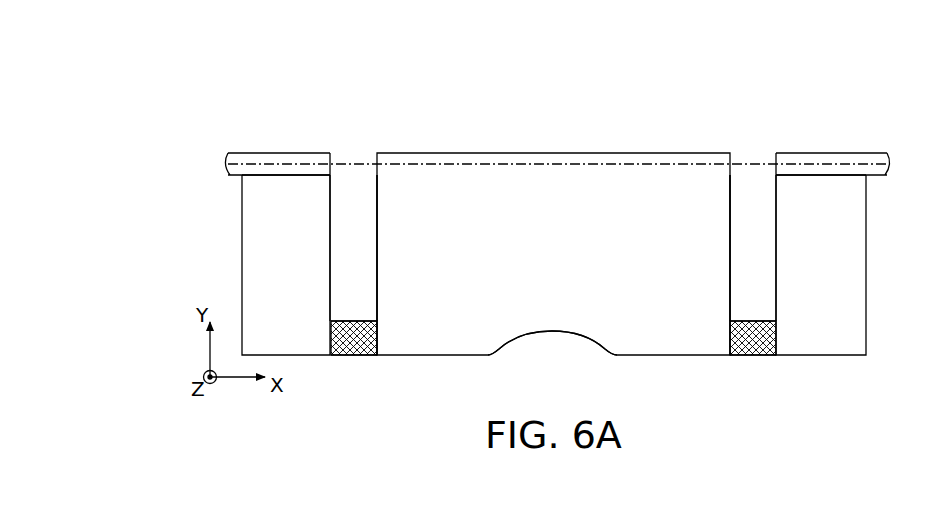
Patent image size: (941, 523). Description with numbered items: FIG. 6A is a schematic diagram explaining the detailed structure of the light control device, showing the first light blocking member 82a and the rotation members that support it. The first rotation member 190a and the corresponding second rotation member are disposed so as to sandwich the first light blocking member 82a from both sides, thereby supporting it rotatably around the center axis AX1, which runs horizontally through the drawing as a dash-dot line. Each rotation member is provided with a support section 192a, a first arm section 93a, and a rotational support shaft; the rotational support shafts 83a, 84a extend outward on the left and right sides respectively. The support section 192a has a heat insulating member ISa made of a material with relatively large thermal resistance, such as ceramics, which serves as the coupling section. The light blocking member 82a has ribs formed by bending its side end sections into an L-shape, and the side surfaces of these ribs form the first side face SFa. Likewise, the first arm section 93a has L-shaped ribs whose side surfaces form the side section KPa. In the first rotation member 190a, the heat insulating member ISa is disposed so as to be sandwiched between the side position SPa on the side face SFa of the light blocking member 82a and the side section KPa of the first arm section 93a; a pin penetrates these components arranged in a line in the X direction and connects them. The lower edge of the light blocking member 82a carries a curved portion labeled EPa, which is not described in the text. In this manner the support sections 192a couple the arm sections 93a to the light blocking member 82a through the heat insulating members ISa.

The center axis AX1 is at (425, 163).
The first light blocking member 82a is at (470, 182).
The rotational support shaft 83a is at (298, 160).
The rotational support shaft 84a is at (788, 153).
The first arm section 93a is at (258, 237).
The first rotation member 190a is at (233, 127).
The support section 192a is at (351, 308).
The side section KPa is at (333, 356).
The side position SPa is at (372, 356).
The heat insulating member ISa is at (352, 357).
The first side face SFa is at (368, 276).
The end protrusion EPa is at (455, 357).